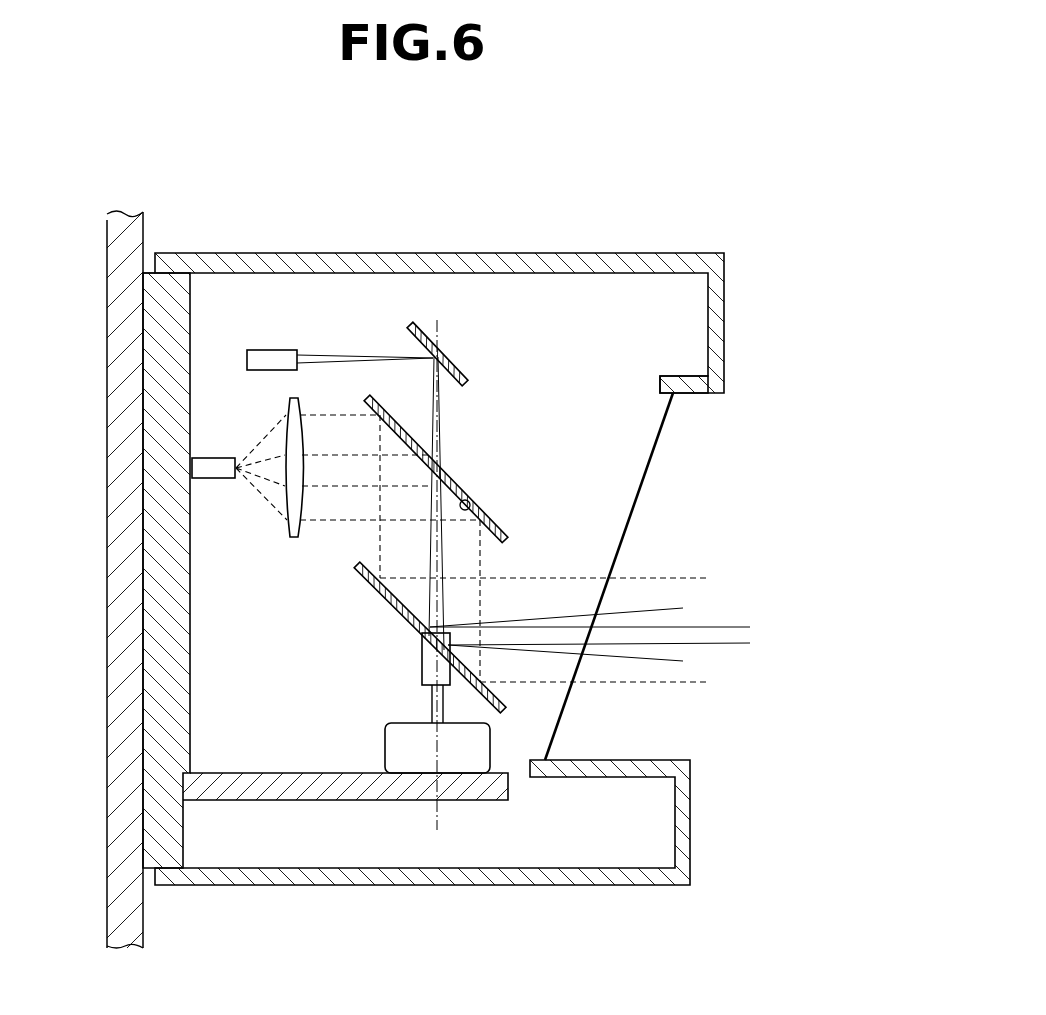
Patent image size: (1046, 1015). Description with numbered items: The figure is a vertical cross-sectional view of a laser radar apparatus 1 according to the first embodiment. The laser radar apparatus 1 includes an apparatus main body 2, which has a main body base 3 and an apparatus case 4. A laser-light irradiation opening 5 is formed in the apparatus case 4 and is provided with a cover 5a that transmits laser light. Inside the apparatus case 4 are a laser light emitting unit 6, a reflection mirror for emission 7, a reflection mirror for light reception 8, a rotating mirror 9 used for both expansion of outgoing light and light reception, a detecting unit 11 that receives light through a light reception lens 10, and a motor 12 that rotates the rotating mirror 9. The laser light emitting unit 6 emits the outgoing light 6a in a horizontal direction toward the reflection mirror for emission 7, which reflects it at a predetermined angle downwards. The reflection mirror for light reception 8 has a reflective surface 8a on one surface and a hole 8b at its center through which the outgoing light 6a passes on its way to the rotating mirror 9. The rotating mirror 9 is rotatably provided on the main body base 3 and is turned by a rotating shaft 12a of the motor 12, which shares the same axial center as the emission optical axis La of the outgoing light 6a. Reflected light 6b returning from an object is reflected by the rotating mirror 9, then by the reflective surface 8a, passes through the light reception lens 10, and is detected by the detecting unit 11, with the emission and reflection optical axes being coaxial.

The laser radar apparatus 1 is at (488, 194).
The apparatus main body 2 is at (427, 533).
The main body base 3 is at (150, 842).
The apparatus case 4 is at (598, 253).
The laser-light irradiation opening 5 is at (690, 394).
The cover 5a is at (655, 465).
The laser light emitting unit 6 is at (272, 348).
The outgoing light 6a is at (443, 432).
The reflected light 6b is at (482, 605).
The reflection mirror for emission 7 is at (466, 385).
The reflection mirror for light reception 8 is at (505, 541).
The reflective surface 8a is at (470, 497).
The hole 8b is at (452, 474).
The rotating mirror 9 is at (402, 617).
The light reception lens 10 is at (290, 526).
The detecting unit 11 is at (215, 457).
The motor 12 is at (385, 742).
The rotating shaft 12a is at (425, 703).
The emission optical axis La is at (435, 548).